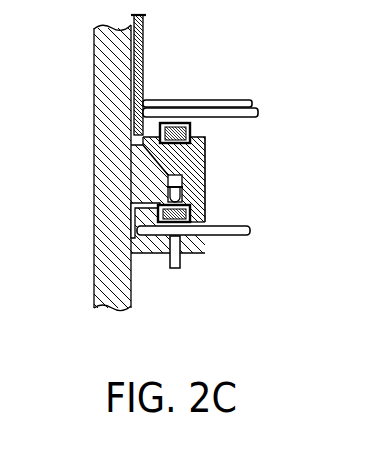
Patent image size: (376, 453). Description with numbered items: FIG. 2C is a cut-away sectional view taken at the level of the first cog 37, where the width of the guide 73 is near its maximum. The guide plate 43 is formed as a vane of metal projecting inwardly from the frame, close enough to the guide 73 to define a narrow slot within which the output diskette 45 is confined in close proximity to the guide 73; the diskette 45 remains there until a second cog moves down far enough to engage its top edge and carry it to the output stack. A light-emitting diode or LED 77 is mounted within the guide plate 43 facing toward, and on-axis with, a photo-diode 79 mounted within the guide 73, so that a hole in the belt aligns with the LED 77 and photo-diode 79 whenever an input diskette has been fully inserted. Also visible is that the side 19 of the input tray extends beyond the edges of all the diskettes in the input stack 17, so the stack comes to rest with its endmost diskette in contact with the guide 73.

The input stack 17 is at (262, 52).
The side of input tray 19 is at (143, 68).
The first cog 37 is at (191, 131).
The guide plate 43 is at (160, 255).
The output diskette 45 is at (230, 236).
The guide 73 is at (207, 173).
The light-emitting diode 77 is at (182, 258).
The photo-diode 79 is at (207, 199).